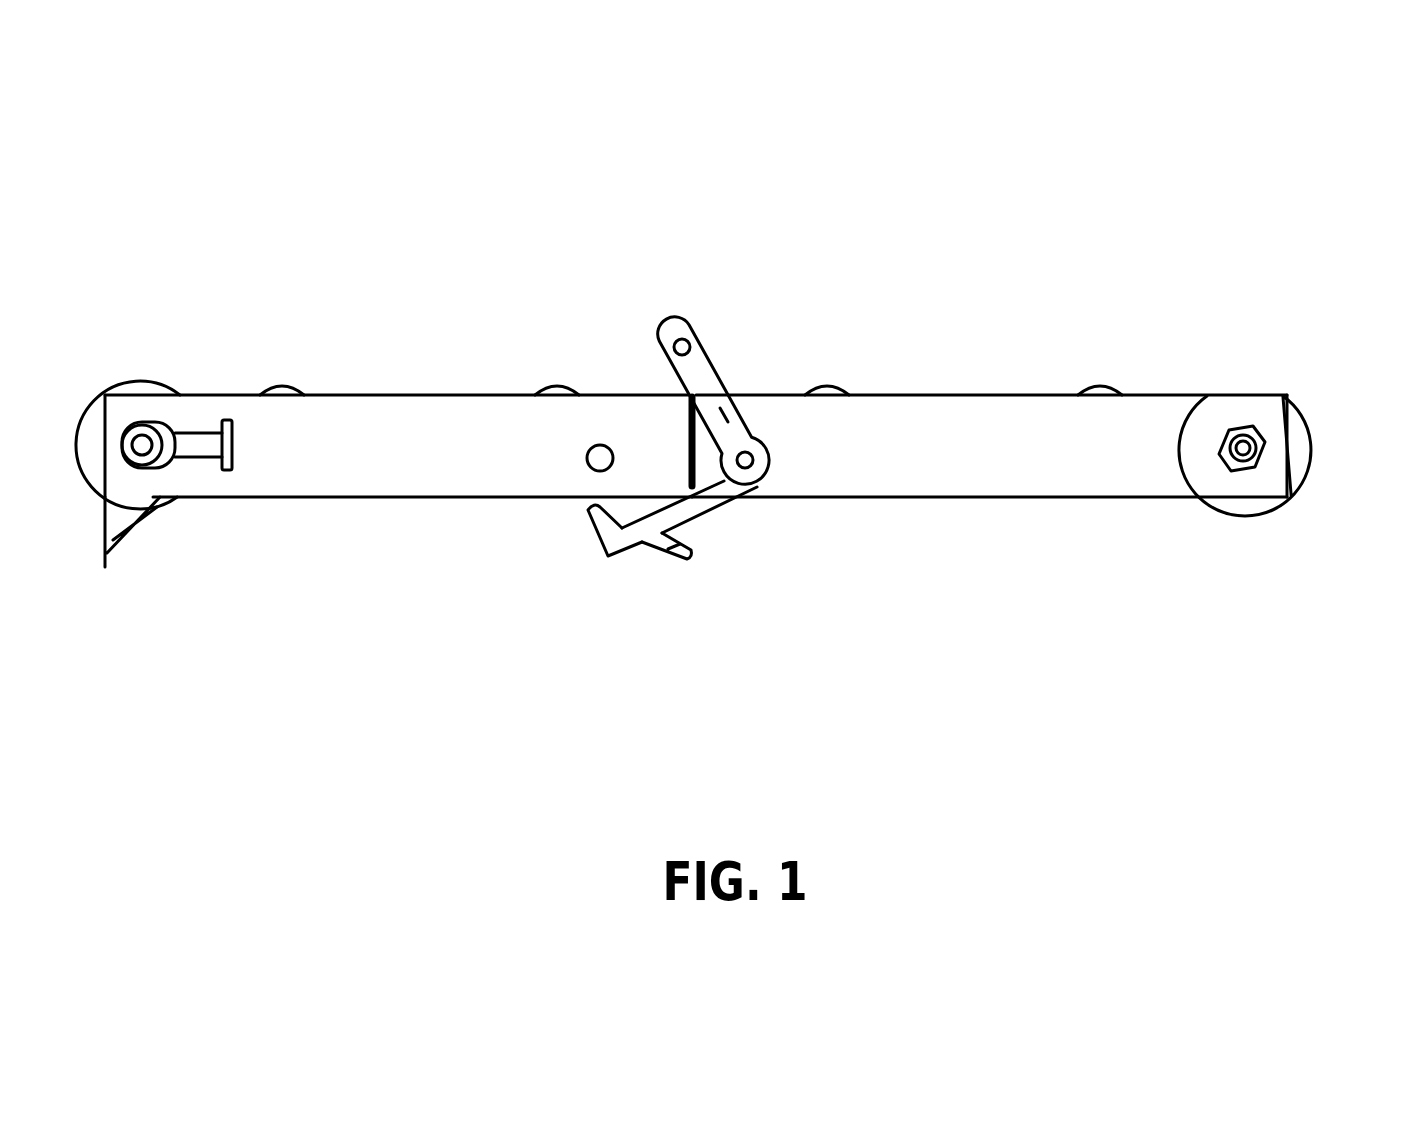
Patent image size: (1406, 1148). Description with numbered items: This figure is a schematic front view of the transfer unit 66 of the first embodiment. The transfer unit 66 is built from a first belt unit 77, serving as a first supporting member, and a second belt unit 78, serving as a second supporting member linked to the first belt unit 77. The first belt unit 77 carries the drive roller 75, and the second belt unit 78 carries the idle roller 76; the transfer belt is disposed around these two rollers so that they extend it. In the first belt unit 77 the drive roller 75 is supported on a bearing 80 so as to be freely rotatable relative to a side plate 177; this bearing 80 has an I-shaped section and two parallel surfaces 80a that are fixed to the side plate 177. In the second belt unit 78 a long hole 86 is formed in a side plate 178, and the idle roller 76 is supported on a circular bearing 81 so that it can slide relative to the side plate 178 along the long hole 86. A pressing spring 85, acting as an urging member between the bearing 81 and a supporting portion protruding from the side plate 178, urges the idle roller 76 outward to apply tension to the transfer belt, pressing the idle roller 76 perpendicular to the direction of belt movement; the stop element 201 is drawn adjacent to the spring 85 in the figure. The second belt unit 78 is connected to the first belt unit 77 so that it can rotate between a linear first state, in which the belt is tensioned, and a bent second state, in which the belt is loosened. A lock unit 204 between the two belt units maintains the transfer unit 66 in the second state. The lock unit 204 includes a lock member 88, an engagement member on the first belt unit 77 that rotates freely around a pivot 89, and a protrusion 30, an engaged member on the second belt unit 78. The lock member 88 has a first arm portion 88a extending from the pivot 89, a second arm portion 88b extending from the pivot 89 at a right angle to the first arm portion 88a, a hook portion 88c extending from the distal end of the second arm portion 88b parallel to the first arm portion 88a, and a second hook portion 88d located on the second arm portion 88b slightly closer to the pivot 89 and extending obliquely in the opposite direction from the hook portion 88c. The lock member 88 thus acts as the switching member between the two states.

The transfer unit 66 is at (843, 216).
The lock unit 204 is at (605, 218).
The protrusion 30 is at (600, 445).
The lock member 88 is at (731, 371).
The first arm portion 88a is at (736, 398).
The second arm portion 88b is at (706, 507).
The hook portion 88c is at (590, 518).
The hook portion 88d is at (670, 550).
The pivot 89 is at (760, 487).
The first belt unit 77 is at (961, 392).
The second belt unit 78 is at (377, 388).
The side plate 177 is at (993, 478).
The side plate 178 is at (396, 478).
The drive roller 75 is at (1227, 385).
The idle roller 76 is at (145, 382).
The stopper plate 201 is at (227, 420).
The bearing 81 is at (103, 495).
The long hole 86 is at (160, 470).
The pressing spring 85 is at (200, 458).
The bearing 80 is at (1248, 477).
The parallel surfaces 80a is at (1217, 453).